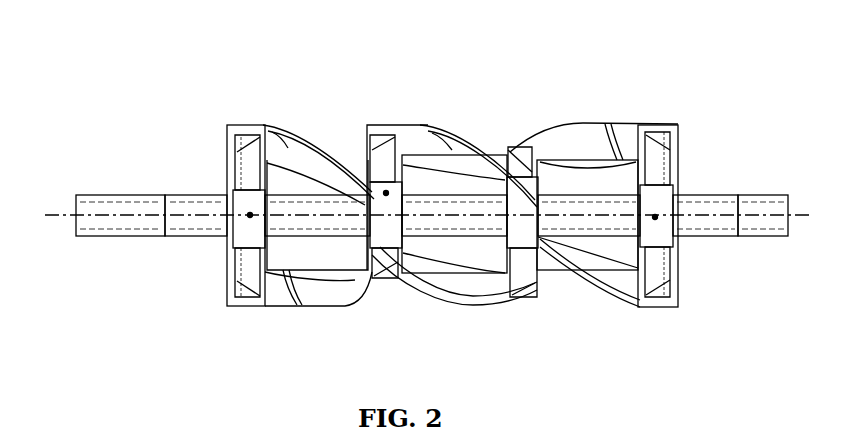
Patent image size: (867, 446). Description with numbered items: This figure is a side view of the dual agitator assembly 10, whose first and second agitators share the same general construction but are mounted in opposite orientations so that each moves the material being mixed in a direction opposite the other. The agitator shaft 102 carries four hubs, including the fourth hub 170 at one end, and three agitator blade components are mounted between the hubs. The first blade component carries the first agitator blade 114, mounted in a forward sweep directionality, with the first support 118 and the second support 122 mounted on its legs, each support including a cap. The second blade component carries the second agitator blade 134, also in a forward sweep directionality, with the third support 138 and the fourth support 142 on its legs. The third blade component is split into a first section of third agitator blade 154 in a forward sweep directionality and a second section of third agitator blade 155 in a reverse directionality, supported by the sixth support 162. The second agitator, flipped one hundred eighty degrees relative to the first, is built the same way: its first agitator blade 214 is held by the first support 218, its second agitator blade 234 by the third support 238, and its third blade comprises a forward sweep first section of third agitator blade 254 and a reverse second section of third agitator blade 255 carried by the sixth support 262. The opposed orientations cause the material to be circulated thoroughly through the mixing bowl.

The dual agitator assembly 10 is at (130, 102).
The agitator shaft 102 is at (122, 237).
The first agitator blade 114 is at (265, 125).
The first support 118 is at (227, 172).
The second support 122 is at (365, 210).
The second agitator blade 134 is at (450, 147).
The third support 138 is at (370, 160).
The fourth support 142 is at (503, 210).
The first section of third agitator blade 154 is at (562, 128).
The second section of third agitator blade 155 is at (632, 135).
The sixth support 162 is at (675, 165).
The fourth hub 170 is at (675, 240).
The first agitator blade 214 is at (627, 303).
The first support 218 is at (677, 292).
The second agitator blade 234 is at (463, 305).
The third support 238 is at (540, 285).
The first section of third agitator blade 254 is at (340, 307).
The second section of third agitator blade 255 is at (262, 307).
The sixth support 262 is at (232, 290).